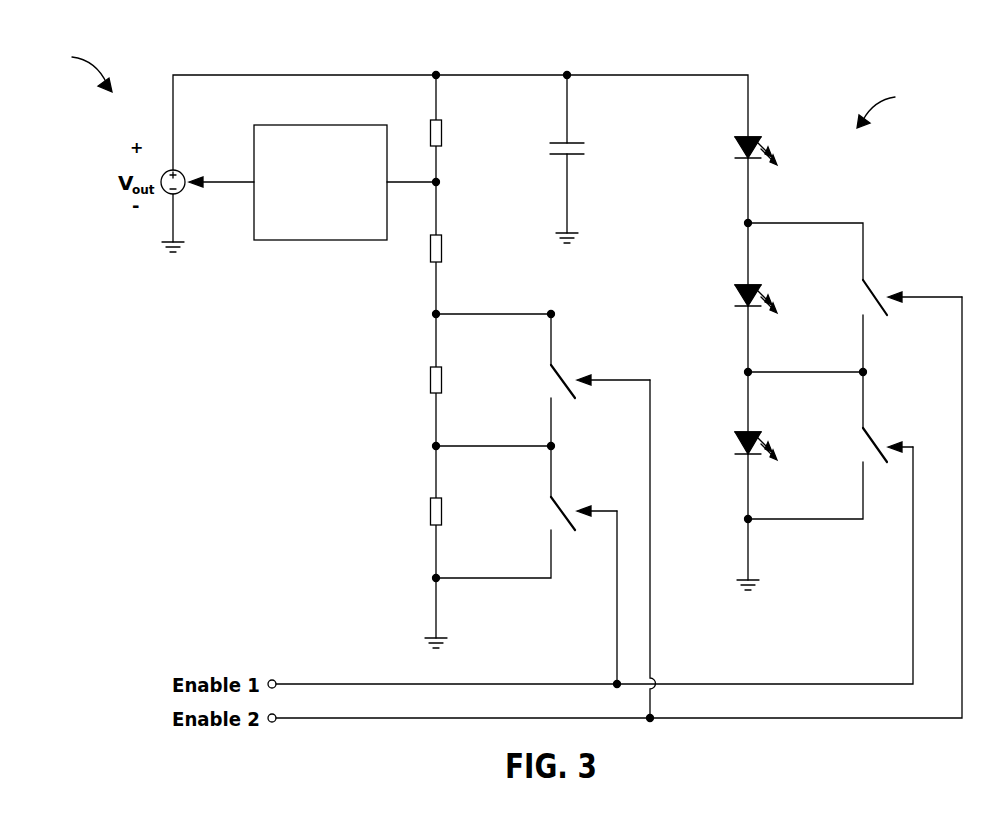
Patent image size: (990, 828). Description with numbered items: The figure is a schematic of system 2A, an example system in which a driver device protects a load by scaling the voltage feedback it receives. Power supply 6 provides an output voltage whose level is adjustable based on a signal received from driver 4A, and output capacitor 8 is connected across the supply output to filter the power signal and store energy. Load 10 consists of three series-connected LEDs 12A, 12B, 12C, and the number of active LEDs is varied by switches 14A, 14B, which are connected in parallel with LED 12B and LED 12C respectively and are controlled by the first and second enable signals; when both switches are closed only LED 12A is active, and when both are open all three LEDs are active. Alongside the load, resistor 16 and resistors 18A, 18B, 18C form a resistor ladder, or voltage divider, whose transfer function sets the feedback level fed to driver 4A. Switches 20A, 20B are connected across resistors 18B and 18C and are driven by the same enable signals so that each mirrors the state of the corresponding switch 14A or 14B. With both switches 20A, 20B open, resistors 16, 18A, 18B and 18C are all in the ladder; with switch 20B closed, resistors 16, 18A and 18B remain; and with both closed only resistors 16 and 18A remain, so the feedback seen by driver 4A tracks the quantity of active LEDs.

The system 2A is at (75, 67).
The load 10 is at (892, 105).
The power supply 6 is at (183, 192).
The driver 4A is at (345, 182).
The resistor 16 is at (445, 131).
The resistor 18A is at (445, 246).
The resistor 18B is at (428, 378).
The resistor 18C is at (428, 510).
The output capacitor 8 is at (578, 157).
The LED 12A is at (734, 136).
The LED 12B is at (734, 284).
The LED 12C is at (734, 431).
The switch 14A is at (868, 297).
The switch 14B is at (868, 445).
The switch 20A is at (556, 378).
The switch 20B is at (556, 508).